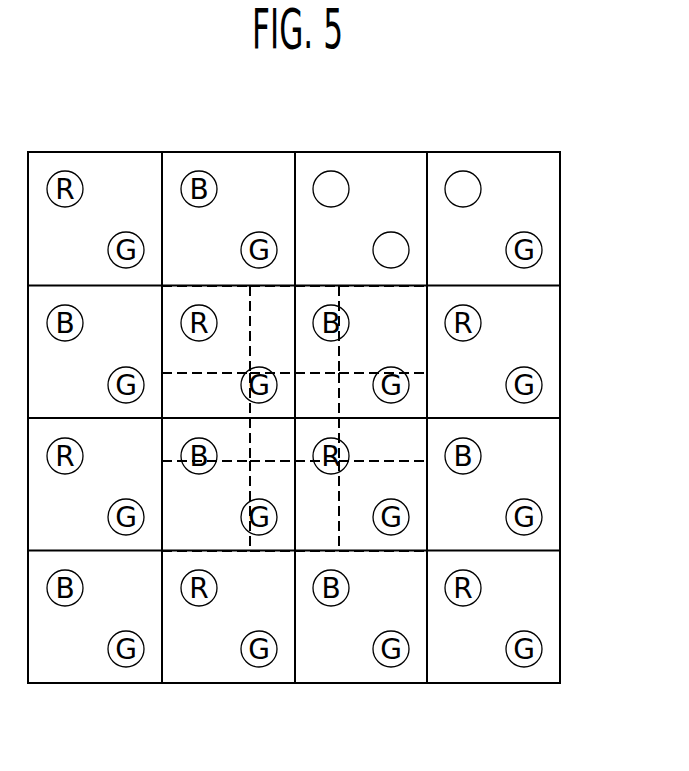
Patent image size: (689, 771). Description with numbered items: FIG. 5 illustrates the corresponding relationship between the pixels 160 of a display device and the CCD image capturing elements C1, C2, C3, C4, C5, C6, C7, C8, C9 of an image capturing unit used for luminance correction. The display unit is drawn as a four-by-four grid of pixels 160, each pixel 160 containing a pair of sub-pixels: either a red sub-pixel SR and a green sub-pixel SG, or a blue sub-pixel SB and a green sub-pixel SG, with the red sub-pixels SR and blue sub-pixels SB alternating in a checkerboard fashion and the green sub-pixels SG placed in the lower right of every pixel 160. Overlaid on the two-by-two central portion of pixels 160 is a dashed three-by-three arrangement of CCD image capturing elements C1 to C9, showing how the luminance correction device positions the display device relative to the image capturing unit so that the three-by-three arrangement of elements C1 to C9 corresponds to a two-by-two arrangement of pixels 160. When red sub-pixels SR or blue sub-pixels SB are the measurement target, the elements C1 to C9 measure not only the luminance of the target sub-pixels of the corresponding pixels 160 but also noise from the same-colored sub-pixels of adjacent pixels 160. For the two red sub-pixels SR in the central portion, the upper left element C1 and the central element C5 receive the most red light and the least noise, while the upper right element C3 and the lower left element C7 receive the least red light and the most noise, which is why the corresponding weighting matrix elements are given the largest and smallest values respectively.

The pixels 160 is at (294, 390).
The red sub-pixel SR is at (331, 157).
The green sub-pixel SG is at (391, 220).
The blue sub-pixel SB is at (463, 152).
The CCD image capturing element C1 is at (206, 329).
The CCD image capturing element C2 is at (294, 329).
The CCD image capturing element C3 is at (383, 329).
The CCD image capturing element C4 is at (206, 417).
The CCD image capturing element C5 is at (294, 417).
The CCD image capturing element C6 is at (383, 417).
The CCD image capturing element C7 is at (206, 506).
The CCD image capturing element C8 is at (294, 506).
The CCD image capturing element C9 is at (383, 506).